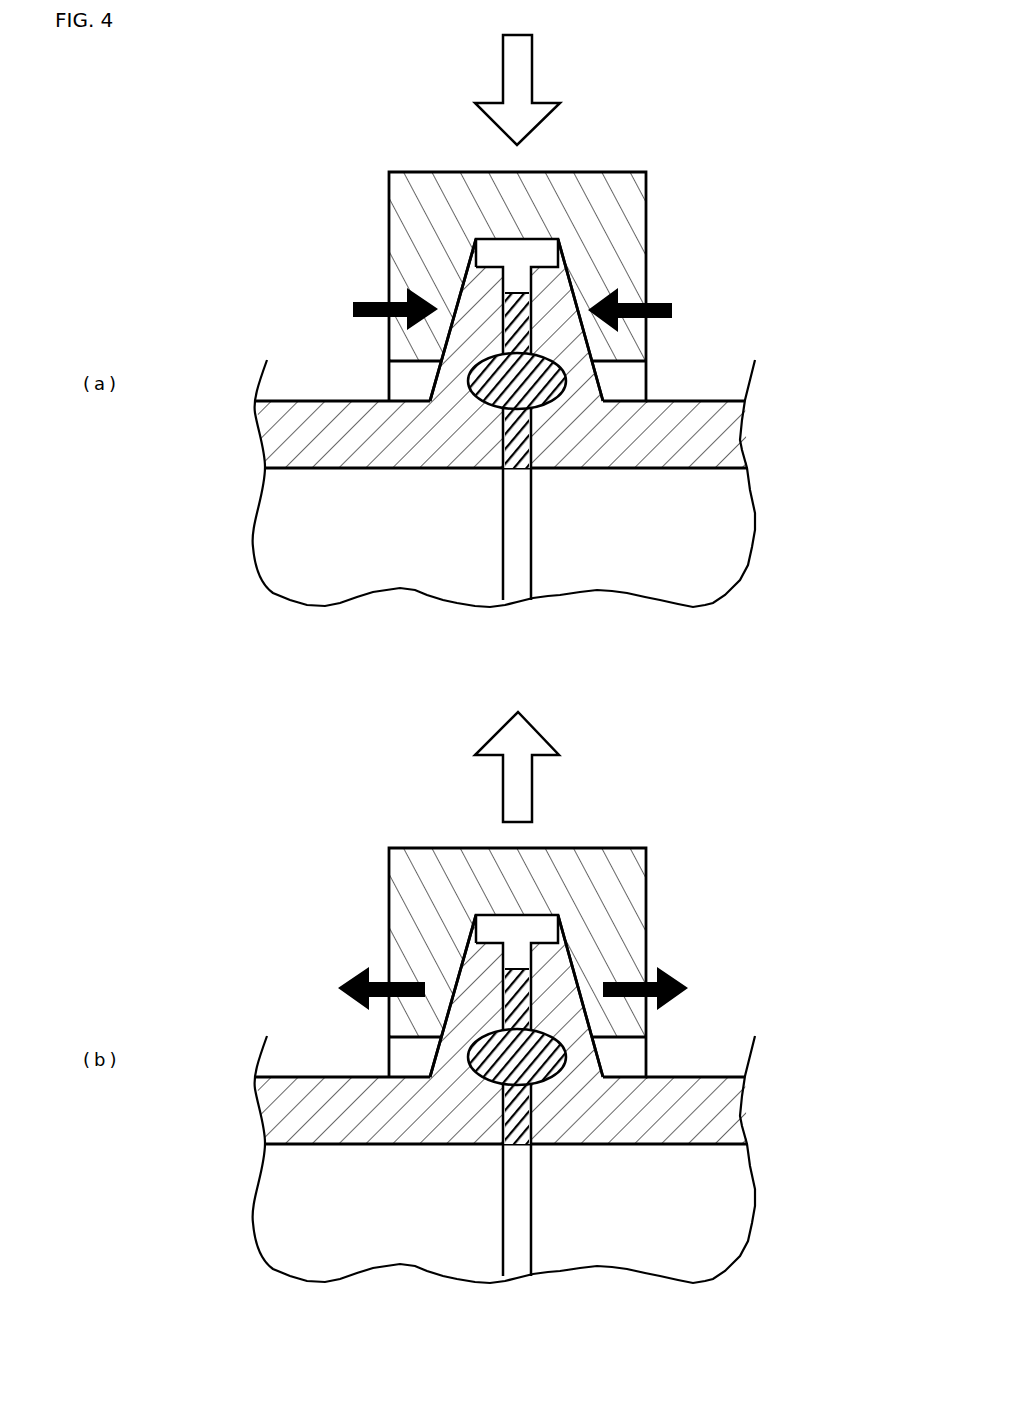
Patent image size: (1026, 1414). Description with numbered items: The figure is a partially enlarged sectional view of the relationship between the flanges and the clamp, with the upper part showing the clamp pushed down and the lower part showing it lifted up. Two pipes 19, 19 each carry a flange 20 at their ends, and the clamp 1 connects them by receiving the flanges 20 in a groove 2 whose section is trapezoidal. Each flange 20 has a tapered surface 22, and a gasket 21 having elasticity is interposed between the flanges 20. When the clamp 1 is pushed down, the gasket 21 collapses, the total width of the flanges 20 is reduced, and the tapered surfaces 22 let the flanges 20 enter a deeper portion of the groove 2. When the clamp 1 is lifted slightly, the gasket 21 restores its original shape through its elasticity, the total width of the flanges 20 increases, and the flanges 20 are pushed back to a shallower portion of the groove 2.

The clamp 1 is at (569, 601).
The groove 2 is at (483, 595).
The pipe 19 is at (519, 761).
The flange 20 is at (478, 541).
The gasket 21 is at (422, 636).
The tapered surface 22 is at (495, 642).